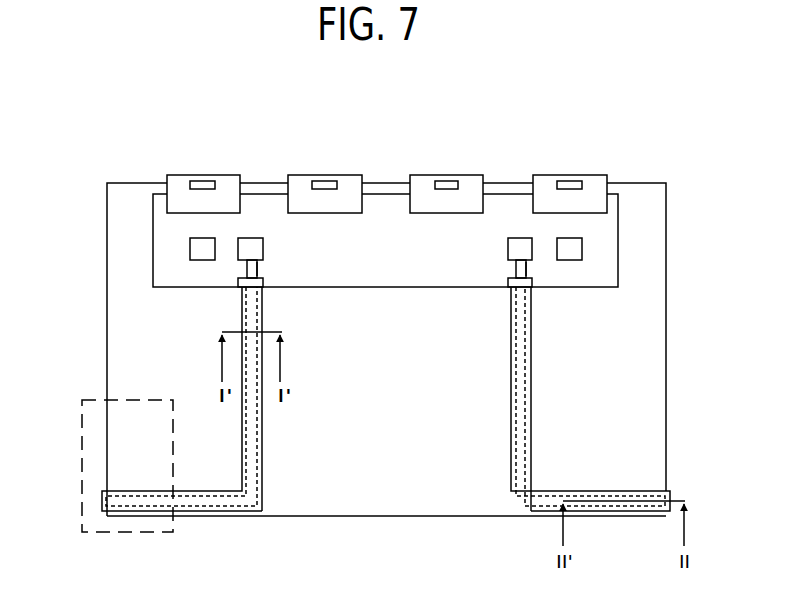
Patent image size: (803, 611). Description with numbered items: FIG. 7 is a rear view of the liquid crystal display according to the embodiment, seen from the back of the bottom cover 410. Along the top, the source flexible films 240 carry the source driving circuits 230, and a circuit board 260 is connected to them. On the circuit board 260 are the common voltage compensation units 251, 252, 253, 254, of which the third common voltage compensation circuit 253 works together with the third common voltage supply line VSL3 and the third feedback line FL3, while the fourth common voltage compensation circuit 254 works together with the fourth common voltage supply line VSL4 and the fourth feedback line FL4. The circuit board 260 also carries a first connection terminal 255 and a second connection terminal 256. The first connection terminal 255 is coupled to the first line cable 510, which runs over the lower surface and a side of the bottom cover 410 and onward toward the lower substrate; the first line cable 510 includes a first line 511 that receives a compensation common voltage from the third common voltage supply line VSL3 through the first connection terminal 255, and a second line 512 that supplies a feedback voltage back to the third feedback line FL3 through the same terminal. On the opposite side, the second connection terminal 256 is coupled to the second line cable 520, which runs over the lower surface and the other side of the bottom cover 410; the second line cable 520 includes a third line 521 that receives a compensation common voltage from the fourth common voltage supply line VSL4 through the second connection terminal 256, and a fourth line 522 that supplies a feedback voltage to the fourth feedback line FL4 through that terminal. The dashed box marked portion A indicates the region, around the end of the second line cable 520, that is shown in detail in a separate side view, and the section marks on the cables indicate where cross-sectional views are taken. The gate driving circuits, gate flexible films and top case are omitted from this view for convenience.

The source driving circuit 230 is at (567, 183).
The source flexible film 240 is at (592, 182).
The common voltage compensation unit 251 is at (563, 238).
The common voltage compensation unit 252 is at (199, 238).
The third common voltage compensation circuit 253 is at (520, 238).
The fourth common voltage compensation circuit 254 is at (252, 238).
The first connection terminal 255 is at (508, 282).
The second connection terminal 256 is at (263, 282).
The circuit board 260 is at (382, 237).
The bottom cover 410 is at (651, 193).
The first line cable 510 is at (525, 511).
The first line 511 is at (647, 497).
The second line 512 is at (620, 508).
The second line cable 520 is at (183, 512).
The third line 521 is at (208, 498).
The fourth line 522 is at (250, 507).
The fourth common voltage supply line VSL4 is at (247, 268).
The fourth feedback line FL4 is at (257, 270).
The third feedback line FL3 is at (516, 268).
The third common voltage supply line VSL3 is at (526, 270).
The portion A is at (82, 451).